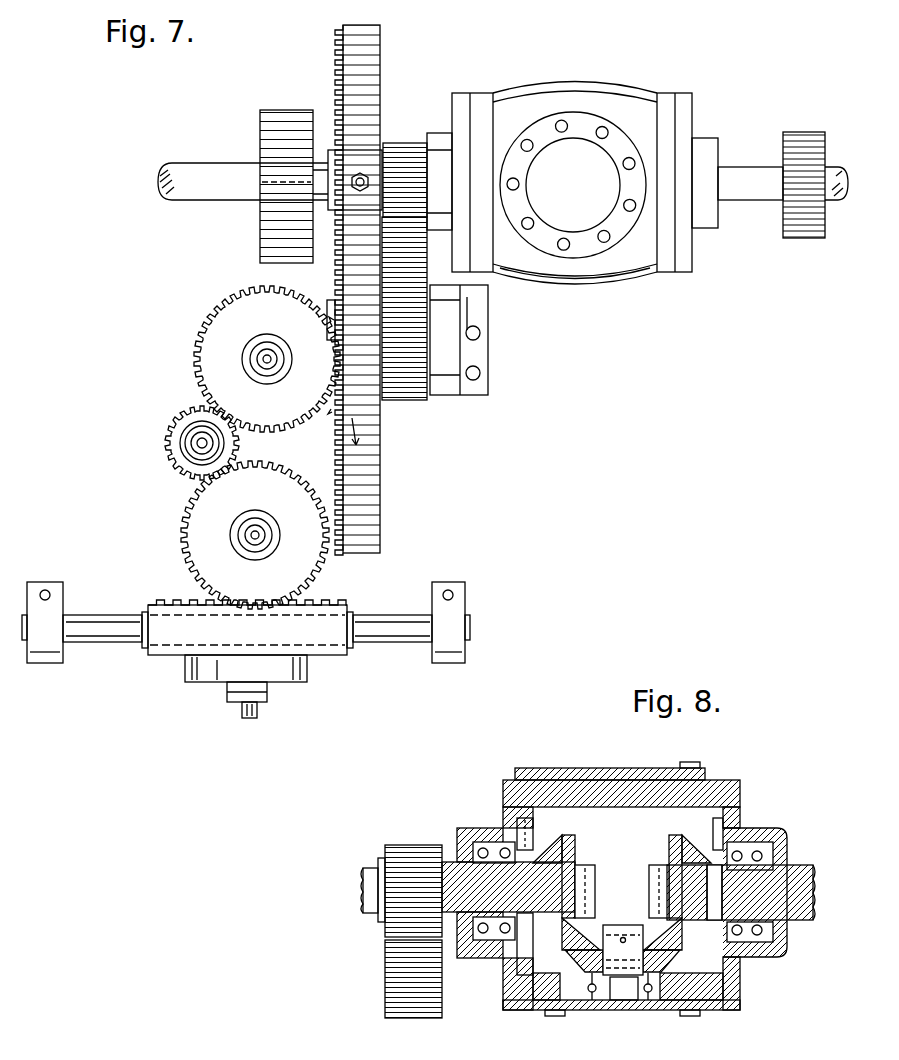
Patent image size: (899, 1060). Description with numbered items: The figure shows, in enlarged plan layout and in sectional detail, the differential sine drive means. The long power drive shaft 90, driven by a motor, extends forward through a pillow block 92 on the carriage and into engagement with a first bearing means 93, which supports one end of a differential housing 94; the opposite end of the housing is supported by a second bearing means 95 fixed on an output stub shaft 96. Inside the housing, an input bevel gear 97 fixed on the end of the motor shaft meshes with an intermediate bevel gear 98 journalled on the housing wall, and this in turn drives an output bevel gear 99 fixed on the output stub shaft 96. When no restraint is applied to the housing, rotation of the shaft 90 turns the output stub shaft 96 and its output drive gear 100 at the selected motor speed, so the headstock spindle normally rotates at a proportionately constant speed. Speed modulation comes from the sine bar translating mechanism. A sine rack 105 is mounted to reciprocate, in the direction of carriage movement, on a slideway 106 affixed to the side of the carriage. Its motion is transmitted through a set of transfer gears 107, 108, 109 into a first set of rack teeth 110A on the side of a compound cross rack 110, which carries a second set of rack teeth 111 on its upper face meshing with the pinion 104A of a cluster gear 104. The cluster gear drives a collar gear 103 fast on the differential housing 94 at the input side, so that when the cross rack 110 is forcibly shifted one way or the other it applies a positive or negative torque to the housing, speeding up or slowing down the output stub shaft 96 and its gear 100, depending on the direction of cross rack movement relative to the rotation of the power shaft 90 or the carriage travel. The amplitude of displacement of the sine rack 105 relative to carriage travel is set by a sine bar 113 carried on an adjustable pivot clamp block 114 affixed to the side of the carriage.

In FIG. 7, the power drive shaft 90 is at (238, 155).
In FIG. 8, the power drive shaft 90 is at (372, 880).
In FIG. 7, the pillow block 92 is at (262, 113).
In FIG. 8, the first bearing means 93 is at (470, 832).
In FIG. 7, the differential housing 94 is at (592, 82).
In FIG. 8, the differential housing 94 is at (515, 812).
In FIG. 8, the second bearing means 95 is at (770, 850).
In FIG. 7, the output stub shaft 96 is at (739, 167).
In FIG. 8, the output stub shaft 96 is at (805, 872).
In FIG. 8, the input bevel gear 97 is at (570, 856).
In FIG. 8, the intermediate bevel gear 98 is at (605, 930).
In FIG. 8, the output bevel gear 99 is at (668, 856).
In FIG. 7, the output drive gear 100 is at (805, 129).
In FIG. 7, the collar gear 103 is at (405, 142).
In FIG. 8, the collar gear 103 is at (410, 843).
In FIG. 7, the cluster gear 104 is at (408, 398).
In FIG. 8, the cluster gear 104 is at (440, 1013).
In FIG. 7, the pinion 104A is at (334, 320).
In FIG. 7, the sine rack 105 is at (250, 644).
In FIG. 7, the slideway 106 is at (391, 643).
In FIG. 7, the transfer gear 107 is at (272, 588).
In FIG. 7, the transfer gear 108 is at (162, 444).
In FIG. 7, the transfer gear 109 is at (290, 412).
In FIG. 7, the compound cross rack 110 is at (381, 508).
In FIG. 7, the first set of rack teeth 110A is at (332, 412).
In FIG. 7, the second set of rack teeth 111 is at (356, 438).
In FIG. 7, the sine bar 113 is at (300, 675).
In FIG. 7, the adjustable pivot clamp block 114 is at (262, 693).